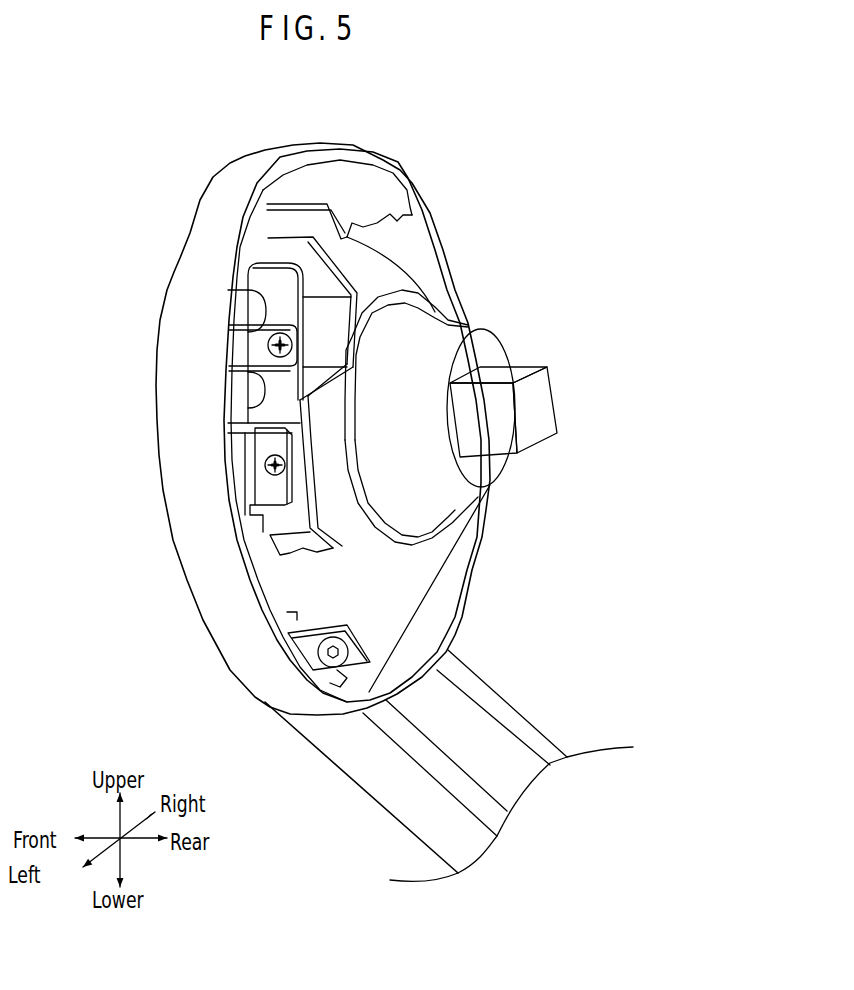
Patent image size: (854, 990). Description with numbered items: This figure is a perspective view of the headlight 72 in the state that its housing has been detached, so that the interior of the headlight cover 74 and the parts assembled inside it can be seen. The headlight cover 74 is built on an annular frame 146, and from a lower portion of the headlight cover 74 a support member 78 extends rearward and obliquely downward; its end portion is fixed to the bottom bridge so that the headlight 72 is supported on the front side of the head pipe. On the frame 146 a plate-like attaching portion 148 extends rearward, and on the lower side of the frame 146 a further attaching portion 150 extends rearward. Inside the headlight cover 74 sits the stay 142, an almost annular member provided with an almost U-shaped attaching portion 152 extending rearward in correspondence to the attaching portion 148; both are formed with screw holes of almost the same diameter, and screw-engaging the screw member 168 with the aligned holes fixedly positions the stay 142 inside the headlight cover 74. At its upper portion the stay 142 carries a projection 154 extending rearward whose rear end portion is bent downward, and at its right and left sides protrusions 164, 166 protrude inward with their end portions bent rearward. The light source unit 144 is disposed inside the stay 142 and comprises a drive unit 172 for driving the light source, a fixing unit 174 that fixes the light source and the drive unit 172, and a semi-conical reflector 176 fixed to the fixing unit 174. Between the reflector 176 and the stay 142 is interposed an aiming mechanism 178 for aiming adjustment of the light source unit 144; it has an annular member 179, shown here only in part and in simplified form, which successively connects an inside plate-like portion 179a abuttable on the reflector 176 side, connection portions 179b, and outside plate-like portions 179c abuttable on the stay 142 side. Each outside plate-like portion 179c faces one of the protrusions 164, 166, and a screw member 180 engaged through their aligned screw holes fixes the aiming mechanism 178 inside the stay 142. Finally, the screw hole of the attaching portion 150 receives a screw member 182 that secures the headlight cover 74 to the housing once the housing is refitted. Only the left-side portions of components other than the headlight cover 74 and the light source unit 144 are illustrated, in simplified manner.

The headlight 72 is at (222, 147).
The headlight cover 74 is at (267, 425).
The annular frame 146 is at (352, 425).
The stay 142 is at (265, 237).
The projection 154 is at (320, 180).
The aiming mechanism 178 is at (349, 405).
The annular member 179 is at (318, 472).
The inside plate-like portion 179a is at (333, 340).
The connection portion 179b is at (320, 390).
The outside plate-like portion 179c is at (273, 522).
The attaching portion 152 is at (248, 272).
The attaching portion 148 is at (197, 357).
The screw member 168 is at (276, 355).
The protrusion 164 is at (194, 490).
The protrusion 166 is at (260, 480).
The screw member 180 is at (260, 465).
The light source unit 144 is at (486, 482).
The fixing unit 174 is at (435, 328).
The reflector 176 is at (425, 573).
The drive unit 172 is at (540, 404).
The attaching portion 150 is at (280, 685).
The screw member 182 is at (333, 667).
The support member 78 is at (463, 783).